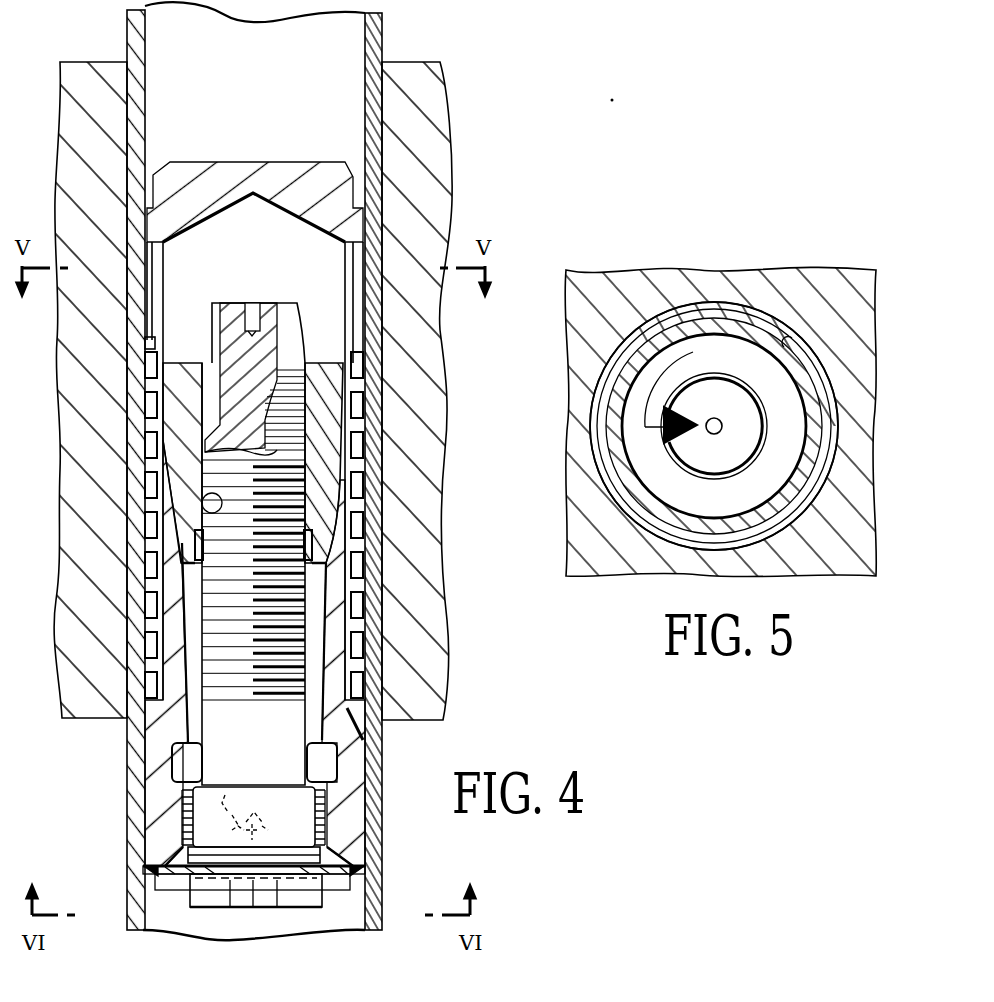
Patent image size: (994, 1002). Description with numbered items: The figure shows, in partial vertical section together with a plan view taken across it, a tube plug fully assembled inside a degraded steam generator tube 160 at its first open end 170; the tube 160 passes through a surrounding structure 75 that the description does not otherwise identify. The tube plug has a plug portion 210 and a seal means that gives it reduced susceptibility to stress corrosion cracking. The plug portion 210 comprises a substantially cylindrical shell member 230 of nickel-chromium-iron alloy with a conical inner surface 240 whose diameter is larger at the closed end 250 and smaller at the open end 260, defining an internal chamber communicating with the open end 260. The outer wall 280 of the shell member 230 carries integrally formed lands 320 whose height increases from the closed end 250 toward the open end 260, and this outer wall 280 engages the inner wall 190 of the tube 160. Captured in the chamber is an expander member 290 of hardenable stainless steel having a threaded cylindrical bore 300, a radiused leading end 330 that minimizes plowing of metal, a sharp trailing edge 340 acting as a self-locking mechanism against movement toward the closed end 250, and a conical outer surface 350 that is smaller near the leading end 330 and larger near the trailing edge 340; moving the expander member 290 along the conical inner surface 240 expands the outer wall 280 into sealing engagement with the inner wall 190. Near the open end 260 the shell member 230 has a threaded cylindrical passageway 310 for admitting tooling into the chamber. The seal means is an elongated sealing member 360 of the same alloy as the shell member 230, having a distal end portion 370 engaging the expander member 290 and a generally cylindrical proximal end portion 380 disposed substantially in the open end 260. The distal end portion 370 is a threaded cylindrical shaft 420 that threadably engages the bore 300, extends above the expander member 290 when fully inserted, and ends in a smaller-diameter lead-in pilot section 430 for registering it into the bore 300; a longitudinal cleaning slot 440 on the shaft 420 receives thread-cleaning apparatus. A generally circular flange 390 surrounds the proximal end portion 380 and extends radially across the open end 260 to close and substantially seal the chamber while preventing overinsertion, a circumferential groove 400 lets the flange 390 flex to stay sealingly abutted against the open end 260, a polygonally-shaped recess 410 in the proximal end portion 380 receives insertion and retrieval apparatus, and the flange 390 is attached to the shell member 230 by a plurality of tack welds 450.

In FIG. 4, the housing block 75 is at (115, 68).
In FIG. 5, the housing block 75 is at (643, 288).
In FIG. 4, the tube 160 is at (376, 44).
In FIG. 5, the tube 160 is at (750, 310).
In FIG. 4, the first open end 170 is at (160, 922).
In FIG. 4, the inner wall 190 is at (365, 72).
In FIG. 5, the inner wall 190 is at (791, 340).
In FIG. 4, the plug portion 210 is at (346, 158).
In FIG. 4, the shell member 230 is at (143, 238).
In FIG. 5, the shell member 230 is at (621, 400).
In FIG. 4, the conical inner surface 240 is at (207, 668).
In FIG. 4, the closed end 250 is at (220, 162).
In FIG. 4, the open end 260 is at (160, 837).
In FIG. 4, the outer wall 280 is at (150, 346).
In FIG. 4, the expander member 290 is at (163, 415).
In FIG. 5, the expander member 290 is at (660, 470).
In FIG. 4, the threaded cylindrical bore 300 is at (200, 517).
In FIG. 4, the threaded cylindrical passageway 310 is at (182, 802).
In FIG. 4, the lands 320 is at (150, 583).
In FIG. 4, the leading end 330 is at (380, 543).
In FIG. 4, the trailing edge 340 is at (413, 345).
In FIG. 4, the conical outer surface 350 is at (343, 404).
In FIG. 4, the elongated sealing member 360 is at (220, 623).
In FIG. 5, the elongated sealing member 360 is at (772, 448).
In FIG. 4, the distal end portion 370 is at (333, 660).
In FIG. 4, the proximal end portion 380 is at (297, 806).
In FIG. 4, the circular flange 390 is at (343, 890).
In FIG. 4, the circumferential groove 400 is at (180, 890).
In FIG. 4, the polygonally-shaped recess 410 is at (230, 787).
In FIG. 4, the threaded cylindrical shaft 420 is at (293, 715).
In FIG. 4, the lead-in pilot section 430 is at (300, 335).
In FIG. 5, the lead-in pilot section 430 is at (860, 577).
In FIG. 4, the cleaning slot 440 is at (217, 350).
In FIG. 5, the cleaning slot 440 is at (689, 376).
In FIG. 4, the tack welds 450 is at (143, 890).